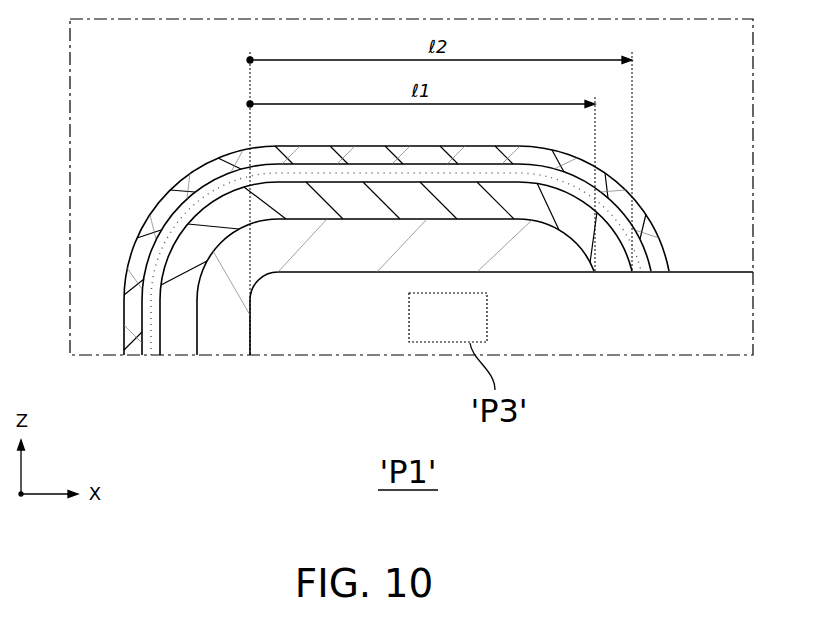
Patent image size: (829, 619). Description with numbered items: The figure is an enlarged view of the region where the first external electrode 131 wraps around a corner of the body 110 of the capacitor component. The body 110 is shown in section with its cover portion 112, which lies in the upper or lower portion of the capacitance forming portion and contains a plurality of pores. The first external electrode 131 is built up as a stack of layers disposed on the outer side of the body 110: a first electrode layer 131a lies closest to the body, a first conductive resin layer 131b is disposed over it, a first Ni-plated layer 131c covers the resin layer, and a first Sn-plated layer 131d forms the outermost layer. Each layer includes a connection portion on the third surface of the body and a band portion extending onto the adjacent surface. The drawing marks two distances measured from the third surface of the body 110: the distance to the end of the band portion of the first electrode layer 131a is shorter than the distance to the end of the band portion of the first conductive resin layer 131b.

The body 110 is at (700, 271).
The cover portion 112 is at (700, 357).
The first external electrode 131 is at (368, 304).
The first electrode layer 131a is at (395, 321).
The first conductive resin layer 131b is at (168, 358).
The first Ni-plated layer 131c is at (155, 358).
The first Sn-plated layer 131d is at (133, 358).